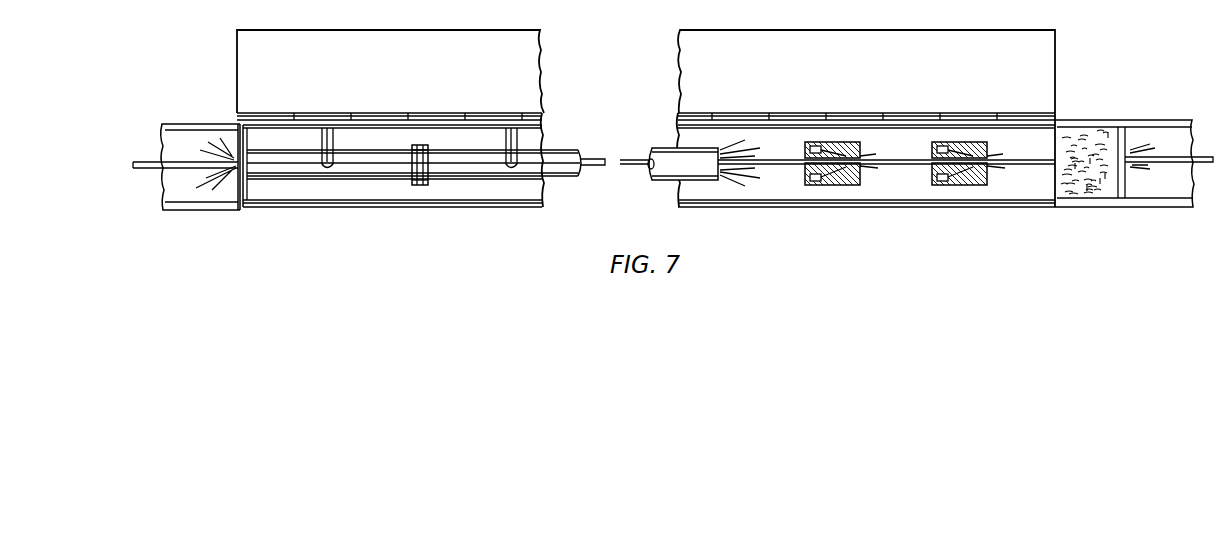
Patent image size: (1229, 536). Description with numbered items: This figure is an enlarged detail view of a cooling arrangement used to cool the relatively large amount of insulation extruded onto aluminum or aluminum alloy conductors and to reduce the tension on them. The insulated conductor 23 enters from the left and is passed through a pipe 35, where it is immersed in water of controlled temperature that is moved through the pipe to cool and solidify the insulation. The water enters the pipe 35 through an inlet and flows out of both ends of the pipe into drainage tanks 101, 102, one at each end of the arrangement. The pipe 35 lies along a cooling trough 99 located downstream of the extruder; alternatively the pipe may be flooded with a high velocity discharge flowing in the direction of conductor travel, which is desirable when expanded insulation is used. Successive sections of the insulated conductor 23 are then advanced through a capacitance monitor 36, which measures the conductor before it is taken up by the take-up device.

The insulated aluminum conductor 23 is at (191, 162).
The drainage tank 101 is at (206, 210).
The cooling trough 99 is at (366, 208).
The pipe 35 is at (478, 178).
The capacitance monitor 36 is at (1088, 205).
The drainage tank 102 is at (1155, 120).